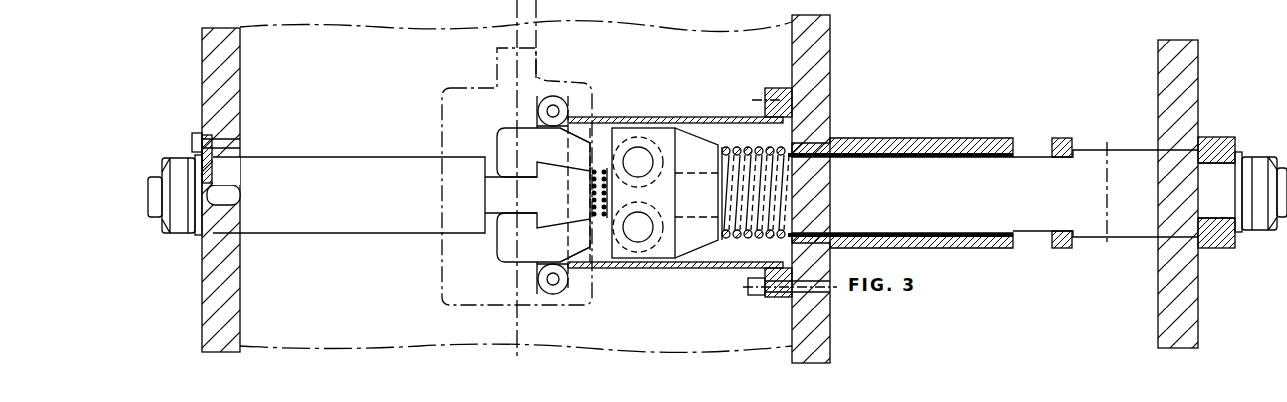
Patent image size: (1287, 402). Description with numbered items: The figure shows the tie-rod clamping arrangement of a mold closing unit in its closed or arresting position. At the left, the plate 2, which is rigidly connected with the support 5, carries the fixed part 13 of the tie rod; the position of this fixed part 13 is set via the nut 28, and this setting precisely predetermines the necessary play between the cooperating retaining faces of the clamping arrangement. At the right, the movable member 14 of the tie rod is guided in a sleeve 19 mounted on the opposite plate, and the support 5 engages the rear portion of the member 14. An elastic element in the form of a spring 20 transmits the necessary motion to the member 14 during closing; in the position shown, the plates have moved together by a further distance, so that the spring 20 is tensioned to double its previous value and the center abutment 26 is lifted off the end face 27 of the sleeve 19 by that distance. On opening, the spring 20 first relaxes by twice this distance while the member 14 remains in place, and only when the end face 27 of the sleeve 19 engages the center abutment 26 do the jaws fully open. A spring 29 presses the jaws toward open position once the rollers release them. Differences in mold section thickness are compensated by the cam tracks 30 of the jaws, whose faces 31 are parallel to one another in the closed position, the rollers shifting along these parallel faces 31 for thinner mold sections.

The plate 2 is at (235, 72).
The support 5 is at (1163, 82).
The fixed part of tie rod 13 is at (347, 153).
The member 14 is at (1027, 153).
The sleeve 19 is at (965, 138).
The spring 20 is at (727, 150).
The center abutment 26 is at (1060, 140).
The end face of the sleeve 27 is at (1015, 235).
The nut 28 is at (183, 222).
The spring 29 is at (603, 173).
The cam tracks 30 is at (580, 133).
The faces of the cam tracks 31 is at (523, 262).